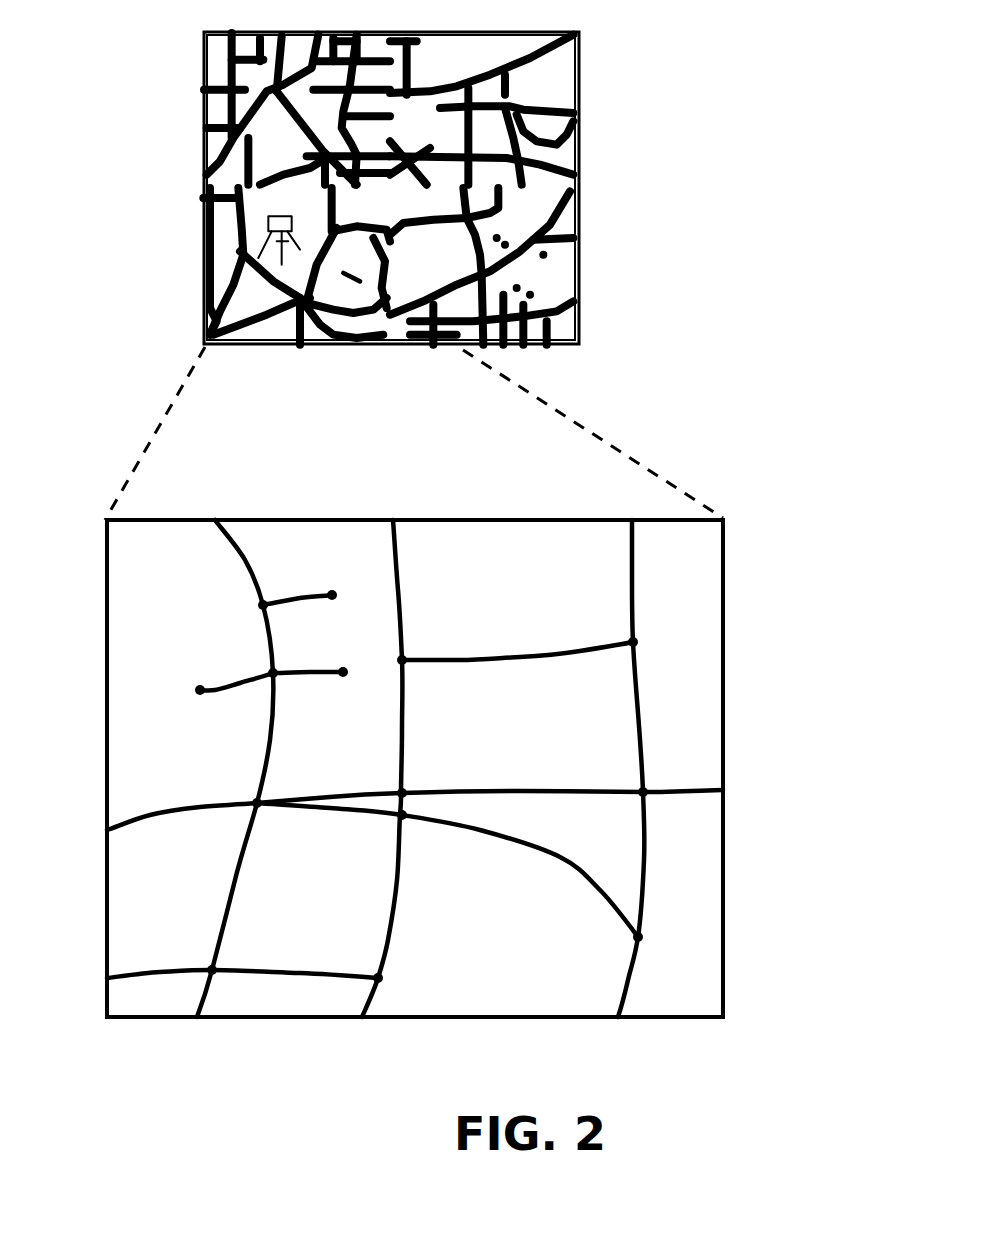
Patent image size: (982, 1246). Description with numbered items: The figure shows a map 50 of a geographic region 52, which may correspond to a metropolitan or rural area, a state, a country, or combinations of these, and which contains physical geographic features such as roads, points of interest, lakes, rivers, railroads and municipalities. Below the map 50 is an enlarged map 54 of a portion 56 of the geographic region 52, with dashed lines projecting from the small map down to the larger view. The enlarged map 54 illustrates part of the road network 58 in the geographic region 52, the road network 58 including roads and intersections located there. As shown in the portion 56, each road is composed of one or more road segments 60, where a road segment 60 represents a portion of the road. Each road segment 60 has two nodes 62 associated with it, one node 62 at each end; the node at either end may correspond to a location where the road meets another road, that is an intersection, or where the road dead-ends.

The map 50 is at (130, 173).
The geographic region 52 is at (444, 69).
The enlarged map 54 is at (730, 617).
The portion 56 is at (460, 989).
The road network 58 is at (197, 822).
The road segment 60 is at (243, 703).
The node 62 is at (183, 680).